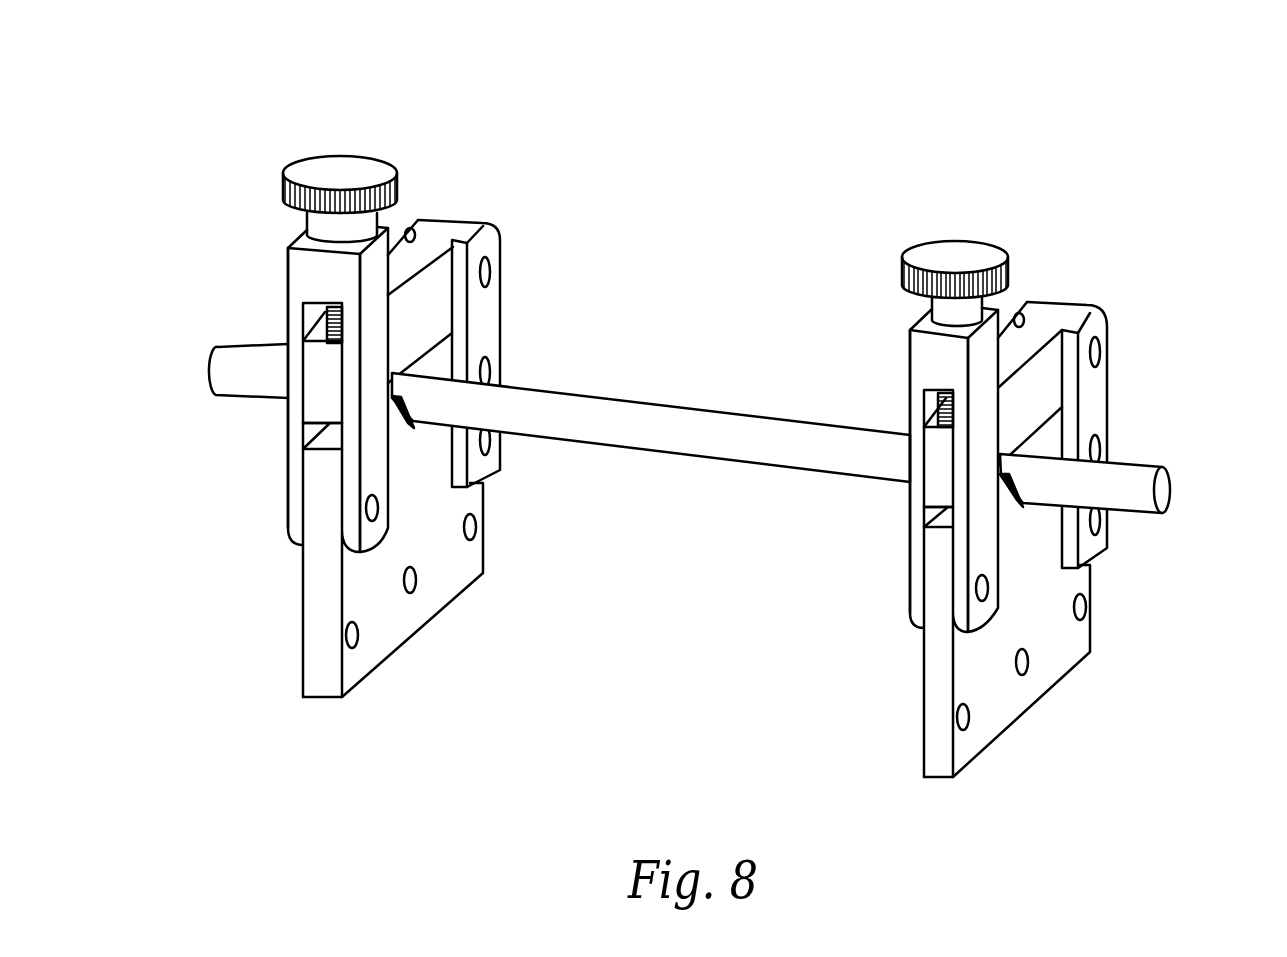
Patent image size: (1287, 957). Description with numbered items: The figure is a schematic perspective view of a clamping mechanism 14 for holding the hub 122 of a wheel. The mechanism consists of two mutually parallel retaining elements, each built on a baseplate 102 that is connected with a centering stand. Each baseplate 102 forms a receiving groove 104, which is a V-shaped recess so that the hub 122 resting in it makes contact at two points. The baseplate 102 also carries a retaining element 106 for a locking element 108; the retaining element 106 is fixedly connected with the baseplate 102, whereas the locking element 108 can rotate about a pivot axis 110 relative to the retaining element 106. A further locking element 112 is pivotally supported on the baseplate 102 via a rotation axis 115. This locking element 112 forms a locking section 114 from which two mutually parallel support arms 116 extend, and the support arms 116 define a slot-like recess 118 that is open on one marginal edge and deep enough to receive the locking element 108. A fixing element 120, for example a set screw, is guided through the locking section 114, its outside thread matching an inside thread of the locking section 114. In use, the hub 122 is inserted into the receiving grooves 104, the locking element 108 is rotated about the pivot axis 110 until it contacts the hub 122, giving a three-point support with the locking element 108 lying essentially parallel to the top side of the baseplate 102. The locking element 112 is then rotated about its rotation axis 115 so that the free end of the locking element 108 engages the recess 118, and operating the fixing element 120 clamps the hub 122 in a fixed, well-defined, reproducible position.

The clamping mechanism 14 is at (1084, 155).
The baseplate 102 is at (435, 594).
The receiving groove 104 is at (579, 497).
The retaining element 106 is at (839, 371).
The locking element 108 is at (437, 238).
The pivot axis 110 is at (500, 245).
The locking element 112 is at (913, 494).
The locking section 114 is at (928, 358).
The rotation axis 115 is at (1003, 482).
The support arms 116 is at (907, 537).
The slot-like recess 118 is at (938, 410).
The fixing element 120 is at (935, 253).
The hub 122 is at (652, 402).